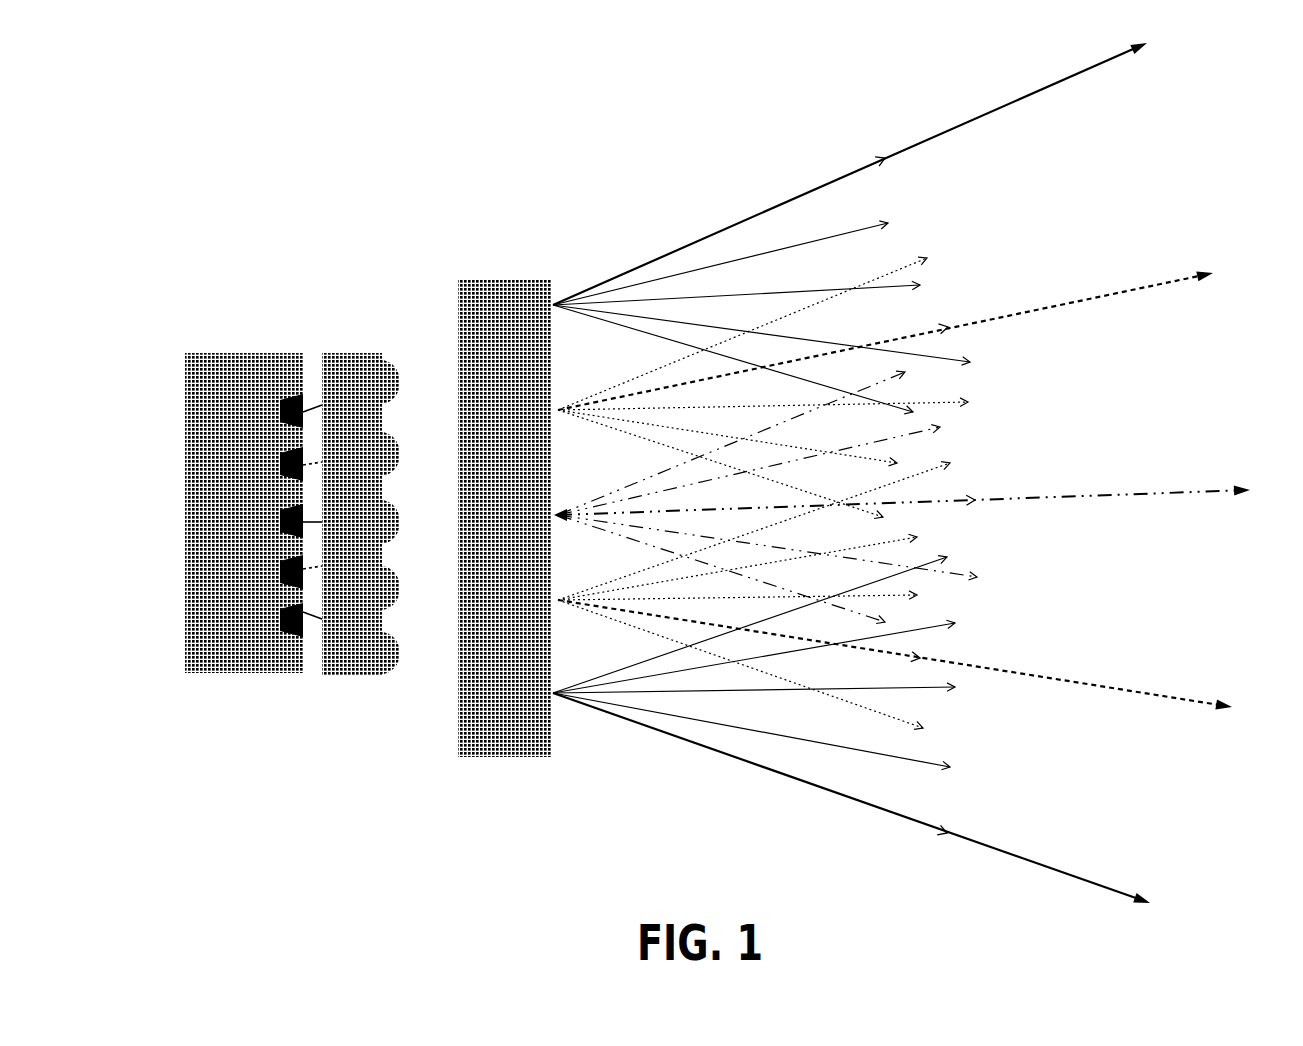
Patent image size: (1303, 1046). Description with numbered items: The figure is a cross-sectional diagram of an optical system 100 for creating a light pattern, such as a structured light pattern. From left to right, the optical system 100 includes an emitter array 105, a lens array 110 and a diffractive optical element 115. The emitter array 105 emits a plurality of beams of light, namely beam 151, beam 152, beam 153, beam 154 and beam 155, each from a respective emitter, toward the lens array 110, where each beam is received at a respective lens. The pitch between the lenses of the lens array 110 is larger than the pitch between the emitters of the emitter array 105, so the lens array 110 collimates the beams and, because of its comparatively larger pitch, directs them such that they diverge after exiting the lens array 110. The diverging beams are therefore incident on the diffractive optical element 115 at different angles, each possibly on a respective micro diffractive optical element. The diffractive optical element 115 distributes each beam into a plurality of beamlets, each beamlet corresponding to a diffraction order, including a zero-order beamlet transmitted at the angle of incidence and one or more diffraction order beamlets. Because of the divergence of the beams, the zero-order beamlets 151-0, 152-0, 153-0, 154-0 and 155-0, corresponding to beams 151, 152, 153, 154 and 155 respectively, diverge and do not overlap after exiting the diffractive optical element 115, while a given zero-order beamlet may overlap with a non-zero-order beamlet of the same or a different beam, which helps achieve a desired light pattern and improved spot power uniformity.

The optical system 100 is at (185, 64).
The emitter array 105 is at (244, 513).
The lens array 110 is at (370, 525).
The diffractive optical element 115 is at (523, 529).
The beam 151 is at (460, 347).
The beam 152 is at (457, 432).
The beam 153 is at (457, 517).
The beam 154 is at (457, 590).
The beam 155 is at (457, 673).
The zero-order beamlet 151-0 is at (850, 228).
The zero-order beamlet 152-0 is at (885, 387).
The zero-order beamlet 153-0 is at (902, 497).
The zero-order beamlet 154-0 is at (895, 596).
The zero-order beamlet 155-0 is at (851, 729).